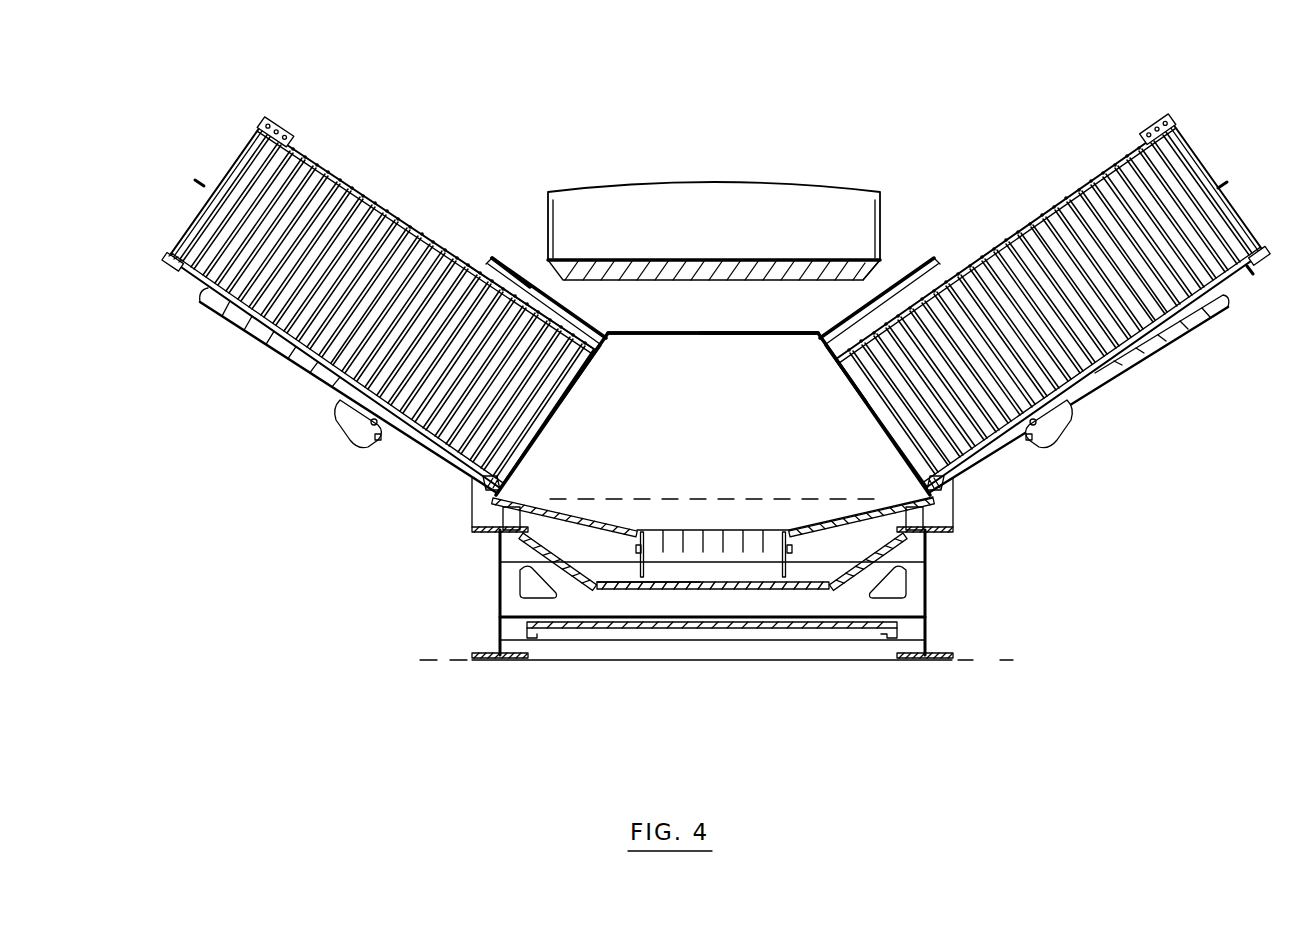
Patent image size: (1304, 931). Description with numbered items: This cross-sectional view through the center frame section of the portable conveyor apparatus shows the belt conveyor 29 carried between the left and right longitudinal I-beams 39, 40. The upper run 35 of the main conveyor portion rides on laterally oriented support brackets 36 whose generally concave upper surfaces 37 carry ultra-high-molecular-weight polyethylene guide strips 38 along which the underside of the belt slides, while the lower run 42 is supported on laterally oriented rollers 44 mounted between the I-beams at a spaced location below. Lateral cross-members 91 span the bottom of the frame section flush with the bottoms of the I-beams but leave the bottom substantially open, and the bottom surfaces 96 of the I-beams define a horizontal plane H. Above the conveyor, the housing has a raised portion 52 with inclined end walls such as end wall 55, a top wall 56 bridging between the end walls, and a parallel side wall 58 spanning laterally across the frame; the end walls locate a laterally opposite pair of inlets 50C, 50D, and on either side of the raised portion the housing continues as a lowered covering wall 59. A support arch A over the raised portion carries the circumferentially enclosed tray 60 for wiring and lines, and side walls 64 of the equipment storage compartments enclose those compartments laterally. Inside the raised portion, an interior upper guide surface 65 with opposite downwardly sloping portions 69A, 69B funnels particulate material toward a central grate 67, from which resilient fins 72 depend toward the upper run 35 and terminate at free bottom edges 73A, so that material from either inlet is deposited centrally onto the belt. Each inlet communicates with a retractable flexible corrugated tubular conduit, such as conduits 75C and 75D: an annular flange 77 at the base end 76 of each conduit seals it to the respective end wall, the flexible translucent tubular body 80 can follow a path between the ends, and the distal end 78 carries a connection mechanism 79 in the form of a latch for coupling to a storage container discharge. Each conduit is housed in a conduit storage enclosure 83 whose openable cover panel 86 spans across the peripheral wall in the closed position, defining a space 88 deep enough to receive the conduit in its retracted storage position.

The retractable flexible corrugated tubular conduit 75D is at (357, 285).
The retractable flexible corrugated tubular conduit 75C is at (1181, 126).
The connection mechanism 79 is at (285, 122).
The tubular body 80 is at (383, 203).
The distal end 78 is at (165, 246).
The openable cover panel 86 is at (263, 350).
The base end 76 is at (485, 463).
The annular flange 77 is at (480, 490).
The guide strips 38 is at (505, 517).
The upper run 35 is at (562, 553).
The concave upper surfaces 37 is at (630, 588).
The support brackets 36 is at (512, 593).
The right side longitudinal I-beam 40 is at (500, 617).
The space 88 is at (483, 272).
The conduit storage enclosure 83 is at (493, 258).
The inclined end wall 55 is at (590, 338).
The raised portion 52 is at (636, 331).
The top wall 56 is at (731, 333).
The tray 60 is at (853, 189).
The support arch A is at (879, 283).
The side walls 64 is at (700, 314).
The side wall 58 is at (714, 432).
The inlet 50D is at (584, 377).
The inlet 50C is at (858, 400).
The downwardly sloping portion 69B is at (546, 497).
The interior upper guide surface 65 is at (604, 520).
The central grate 67 is at (766, 530).
The downwardly sloping portion 69A is at (829, 520).
The lowered covering wall 59 is at (867, 497).
The left side longitudinal I-beam 39 is at (958, 535).
The belt conveyor 29 is at (865, 548).
The lower run 42 is at (889, 624).
The fin 72 is at (640, 580).
The free bottom edge 73A is at (668, 590).
The lateral cross-members 91 is at (777, 658).
The rollers 44 is at (860, 630).
The bottom surfaces 96 is at (945, 660).
The horizontal plane H is at (987, 664).